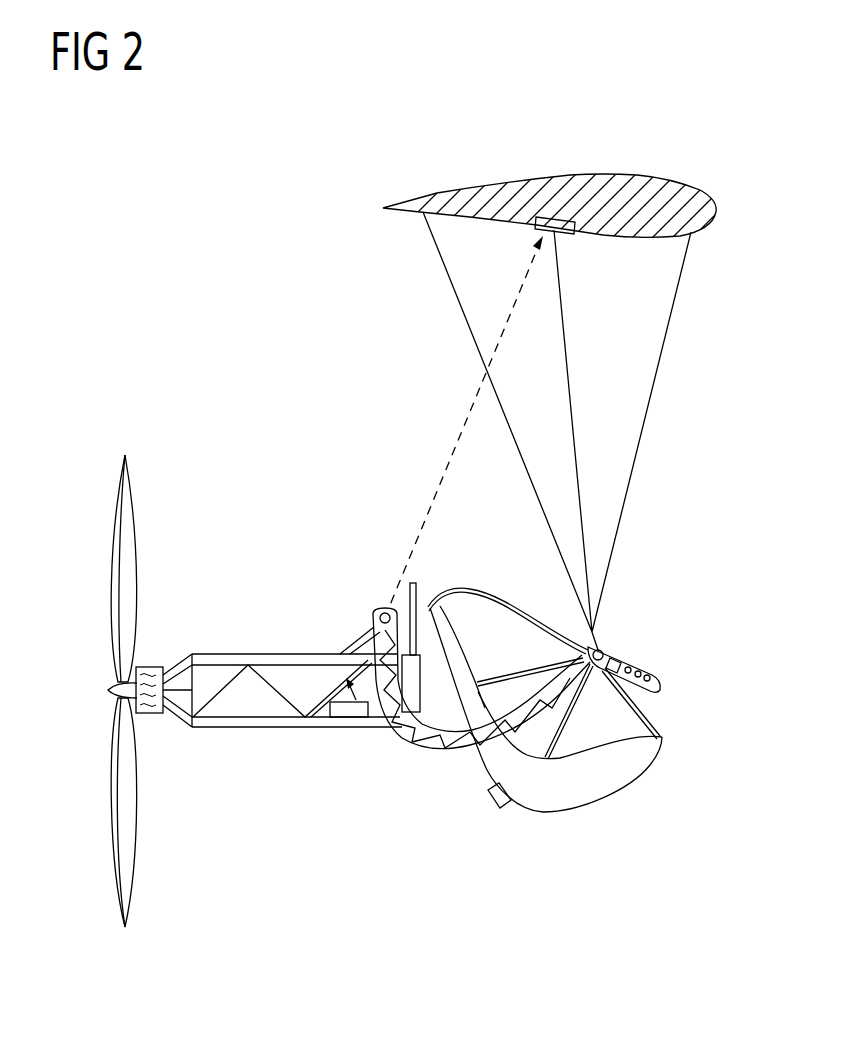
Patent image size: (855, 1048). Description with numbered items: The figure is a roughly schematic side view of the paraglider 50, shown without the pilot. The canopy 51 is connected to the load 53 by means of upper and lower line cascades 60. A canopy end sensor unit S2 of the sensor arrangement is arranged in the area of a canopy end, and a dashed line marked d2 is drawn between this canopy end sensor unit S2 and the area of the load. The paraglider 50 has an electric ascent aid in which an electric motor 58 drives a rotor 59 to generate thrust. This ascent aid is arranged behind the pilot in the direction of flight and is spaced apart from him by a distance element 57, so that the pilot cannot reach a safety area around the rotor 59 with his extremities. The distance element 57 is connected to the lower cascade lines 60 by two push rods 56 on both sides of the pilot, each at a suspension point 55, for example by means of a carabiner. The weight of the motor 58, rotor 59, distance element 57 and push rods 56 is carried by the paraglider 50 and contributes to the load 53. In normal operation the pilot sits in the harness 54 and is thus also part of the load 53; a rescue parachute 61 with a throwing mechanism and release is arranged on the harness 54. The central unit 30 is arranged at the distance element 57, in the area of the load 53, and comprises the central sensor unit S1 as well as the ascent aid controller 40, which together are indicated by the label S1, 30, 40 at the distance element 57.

The paraglider 50 is at (608, 142).
The canopy 51 is at (715, 205).
The canopy end sensor unit S2 is at (565, 235).
The line cascades 60 is at (462, 315).
The distance between sensors d2 is at (453, 449).
The rotor 59 is at (125, 577).
The electric motor 58 is at (148, 715).
The distance element 57 is at (297, 653).
The central sensor unit S1 is at (370, 733).
The central unit 30 is at (349, 697).
The ascent aid controller 40 is at (350, 717).
The push rods 56 is at (434, 750).
The suspension point 55 is at (604, 647).
The load 53 is at (614, 842).
The harness 54 is at (553, 813).
The rescue parachute 61 is at (494, 809).